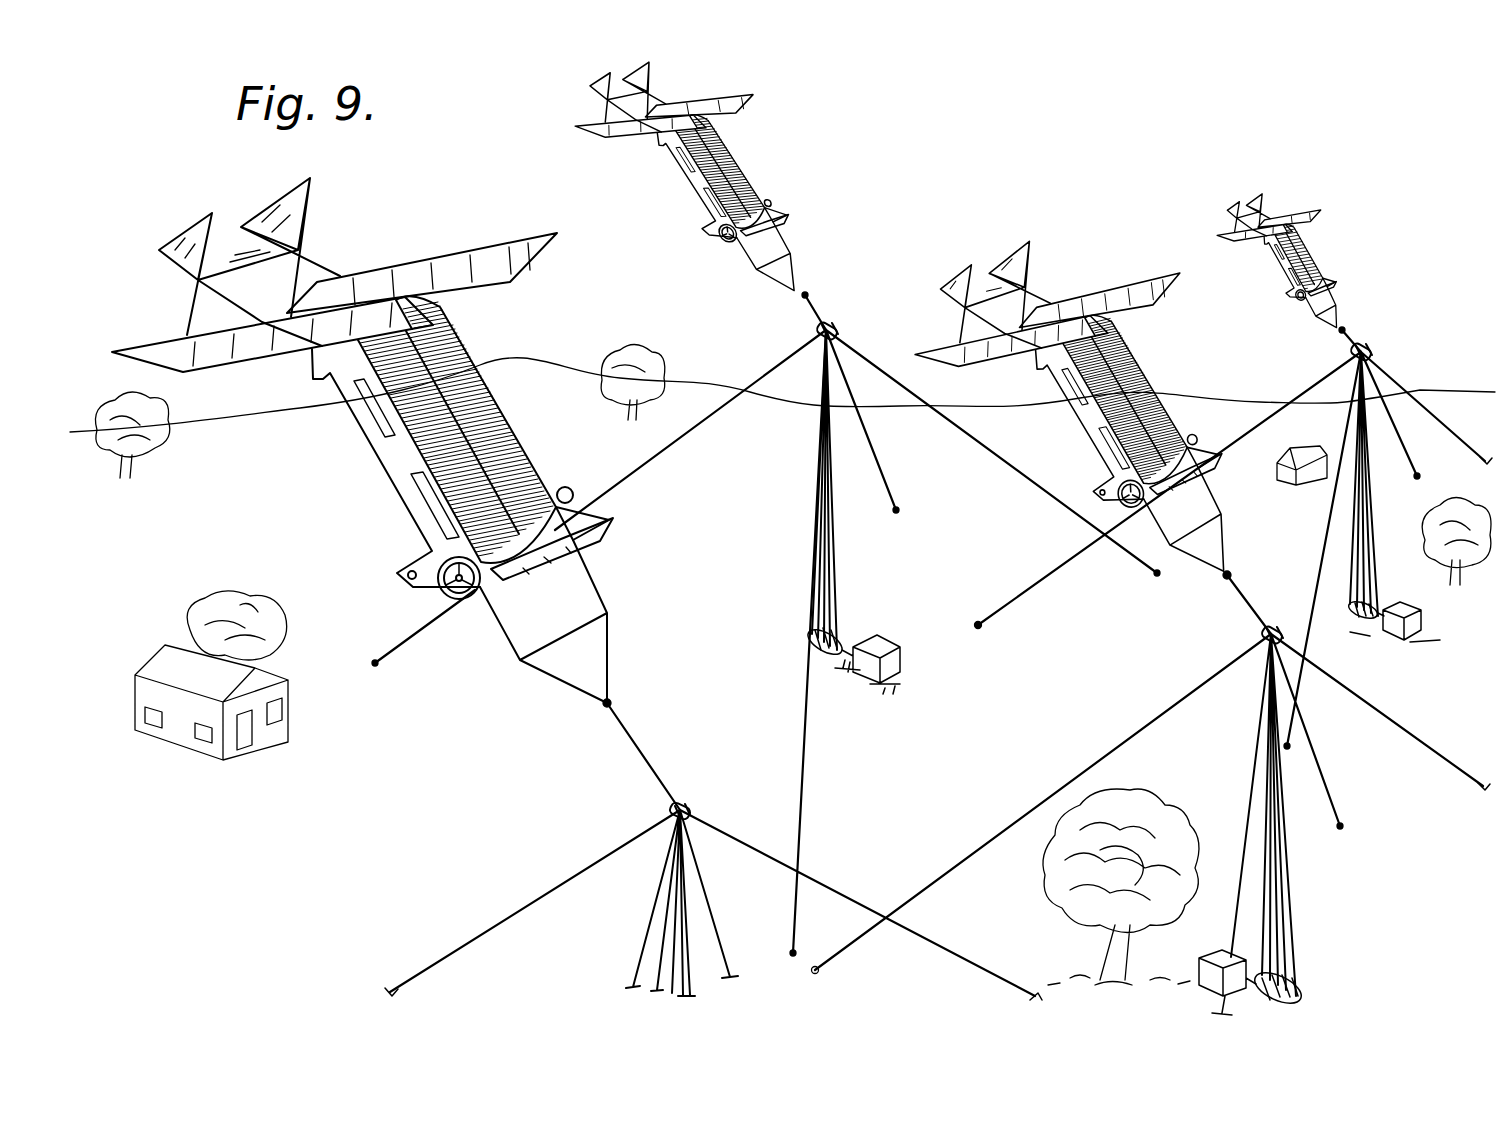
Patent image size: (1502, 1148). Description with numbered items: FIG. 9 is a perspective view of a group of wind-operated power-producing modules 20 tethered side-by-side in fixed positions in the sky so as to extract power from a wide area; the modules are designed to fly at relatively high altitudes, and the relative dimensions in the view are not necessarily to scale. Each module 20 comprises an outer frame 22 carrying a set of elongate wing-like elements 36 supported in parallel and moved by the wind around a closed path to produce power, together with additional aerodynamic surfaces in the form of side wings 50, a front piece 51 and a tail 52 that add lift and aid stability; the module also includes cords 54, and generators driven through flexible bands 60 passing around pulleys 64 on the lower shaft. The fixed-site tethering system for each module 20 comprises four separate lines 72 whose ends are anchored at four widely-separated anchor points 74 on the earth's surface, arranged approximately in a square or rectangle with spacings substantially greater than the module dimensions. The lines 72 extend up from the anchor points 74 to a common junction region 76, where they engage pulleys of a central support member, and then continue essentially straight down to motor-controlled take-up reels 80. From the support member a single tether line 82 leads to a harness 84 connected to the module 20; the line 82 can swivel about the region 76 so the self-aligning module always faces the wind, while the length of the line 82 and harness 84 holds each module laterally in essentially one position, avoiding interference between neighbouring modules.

The wind-power module 20 is at (756, 379).
The outer frame 22 is at (417, 507).
The wing-like elements 36 is at (493, 447).
The side wings 50 is at (458, 262).
The front piece 51 is at (573, 537).
The tail 52 is at (227, 232).
The cords 54 is at (500, 622).
The flexible bands 60 is at (450, 600).
The pulleys 64 is at (567, 493).
The lines 72 is at (708, 420).
The anchor points 74 is at (375, 667).
The common junction region 76 is at (838, 325).
The take-up reels 80 is at (855, 624).
The tether line 82 is at (633, 743).
The harness 84 is at (616, 668).